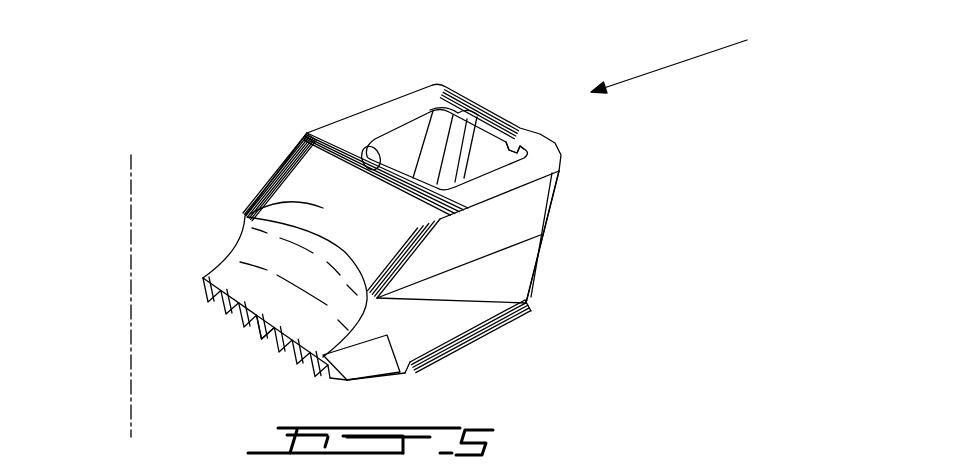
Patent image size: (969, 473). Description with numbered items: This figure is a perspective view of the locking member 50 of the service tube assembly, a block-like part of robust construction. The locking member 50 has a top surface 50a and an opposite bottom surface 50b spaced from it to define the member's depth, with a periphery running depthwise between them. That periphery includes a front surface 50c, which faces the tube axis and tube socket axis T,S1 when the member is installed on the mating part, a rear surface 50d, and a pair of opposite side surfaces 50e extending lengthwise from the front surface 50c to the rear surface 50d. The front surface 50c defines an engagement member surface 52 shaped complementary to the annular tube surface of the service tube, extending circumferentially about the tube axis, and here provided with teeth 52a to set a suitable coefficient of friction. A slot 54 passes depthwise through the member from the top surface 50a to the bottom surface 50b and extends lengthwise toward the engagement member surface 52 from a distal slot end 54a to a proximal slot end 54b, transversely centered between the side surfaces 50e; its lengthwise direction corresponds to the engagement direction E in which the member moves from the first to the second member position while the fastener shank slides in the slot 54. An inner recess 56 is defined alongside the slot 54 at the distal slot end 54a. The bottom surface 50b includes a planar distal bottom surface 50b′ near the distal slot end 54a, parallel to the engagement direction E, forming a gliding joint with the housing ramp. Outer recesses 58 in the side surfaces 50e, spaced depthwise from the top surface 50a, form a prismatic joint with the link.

The locking member 50 is at (120, 118).
The top surface 50a is at (358, 122).
The bottom surface 50b is at (505, 365).
The distal bottom surface 50b′ is at (513, 320).
The front surface 50c is at (245, 216).
The rear surface 50d is at (552, 206).
The side surfaces 50e is at (467, 232).
The engagement member surface 52 is at (233, 336).
The teeth 52a is at (270, 307).
The slot 54 is at (417, 122).
The distal slot end 54a is at (513, 134).
The proximal slot end 54b is at (362, 159).
The inner recess 56 is at (540, 124).
The outer recess 58 is at (457, 268).
The engagement direction E is at (690, 62).
The tube axis and tube socket axis T,S1 is at (128, 331).